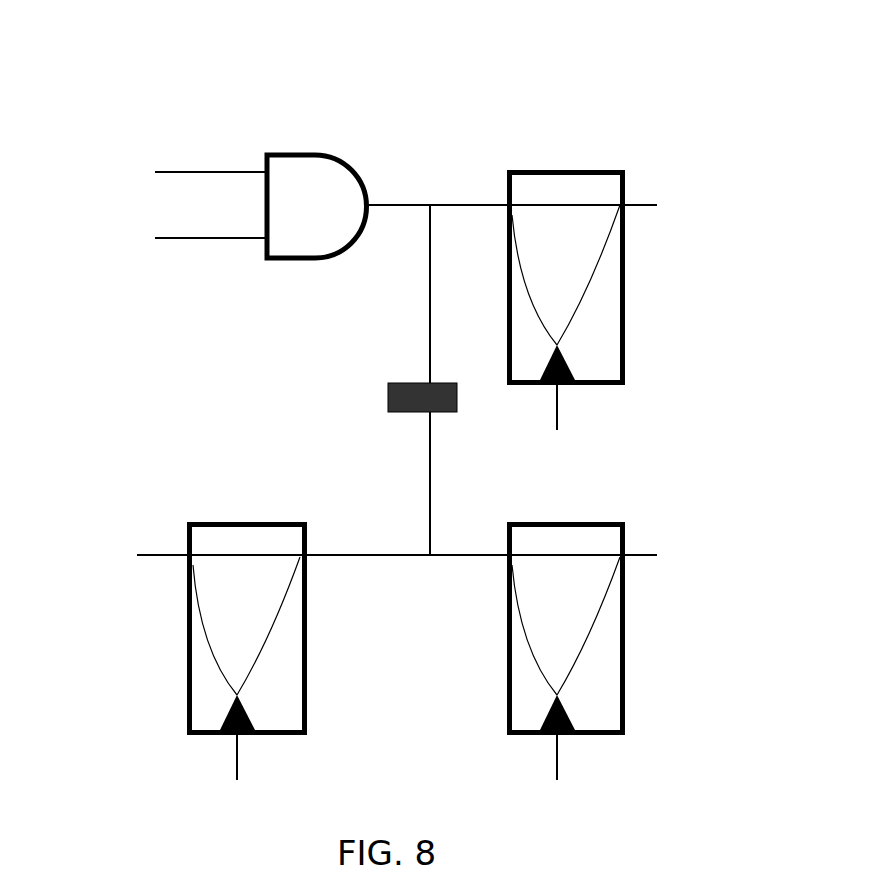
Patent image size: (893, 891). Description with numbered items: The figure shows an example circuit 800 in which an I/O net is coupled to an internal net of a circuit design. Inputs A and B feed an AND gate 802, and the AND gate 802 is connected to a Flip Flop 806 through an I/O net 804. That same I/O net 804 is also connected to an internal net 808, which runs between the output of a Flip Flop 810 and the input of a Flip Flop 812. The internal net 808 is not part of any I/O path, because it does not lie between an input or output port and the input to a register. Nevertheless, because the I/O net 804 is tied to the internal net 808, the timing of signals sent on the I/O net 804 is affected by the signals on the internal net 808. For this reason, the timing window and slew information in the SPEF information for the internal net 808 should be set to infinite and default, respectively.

The circuit 800 is at (148, 125).
The AND gate 802 is at (300, 166).
The I/O net 804 is at (437, 163).
The Flip Flop 806 is at (626, 288).
The internal net 808 is at (372, 553).
The Flip Flop 810 is at (185, 690).
The Flip Flop 812 is at (626, 630).